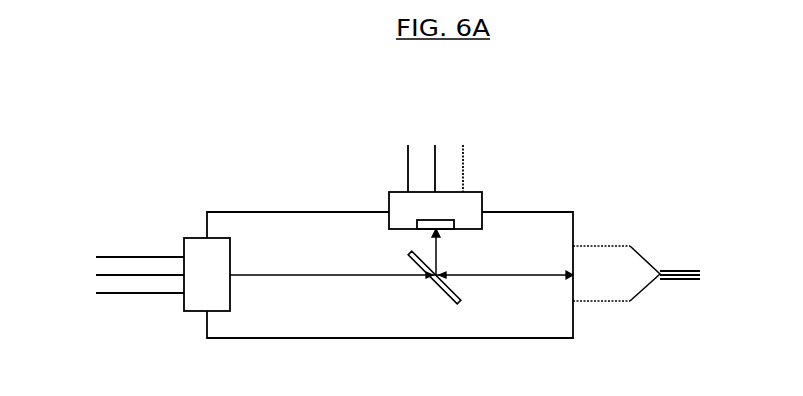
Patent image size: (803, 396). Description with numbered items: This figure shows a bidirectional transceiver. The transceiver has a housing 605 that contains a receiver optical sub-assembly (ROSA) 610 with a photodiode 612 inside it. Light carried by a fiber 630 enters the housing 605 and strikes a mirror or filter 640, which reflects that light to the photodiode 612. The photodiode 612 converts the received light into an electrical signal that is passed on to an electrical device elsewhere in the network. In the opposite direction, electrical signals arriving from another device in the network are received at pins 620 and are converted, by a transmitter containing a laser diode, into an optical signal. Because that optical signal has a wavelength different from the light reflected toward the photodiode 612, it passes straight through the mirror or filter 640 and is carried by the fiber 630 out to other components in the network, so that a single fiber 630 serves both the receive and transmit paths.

The housing 605 is at (575, 327).
The receiver optical sub-assembly (ROSA) 610 is at (486, 193).
The photodiode 612 is at (466, 232).
The pins 620 is at (143, 295).
The fiber 630 is at (638, 252).
The mirror or filter 640 is at (445, 301).